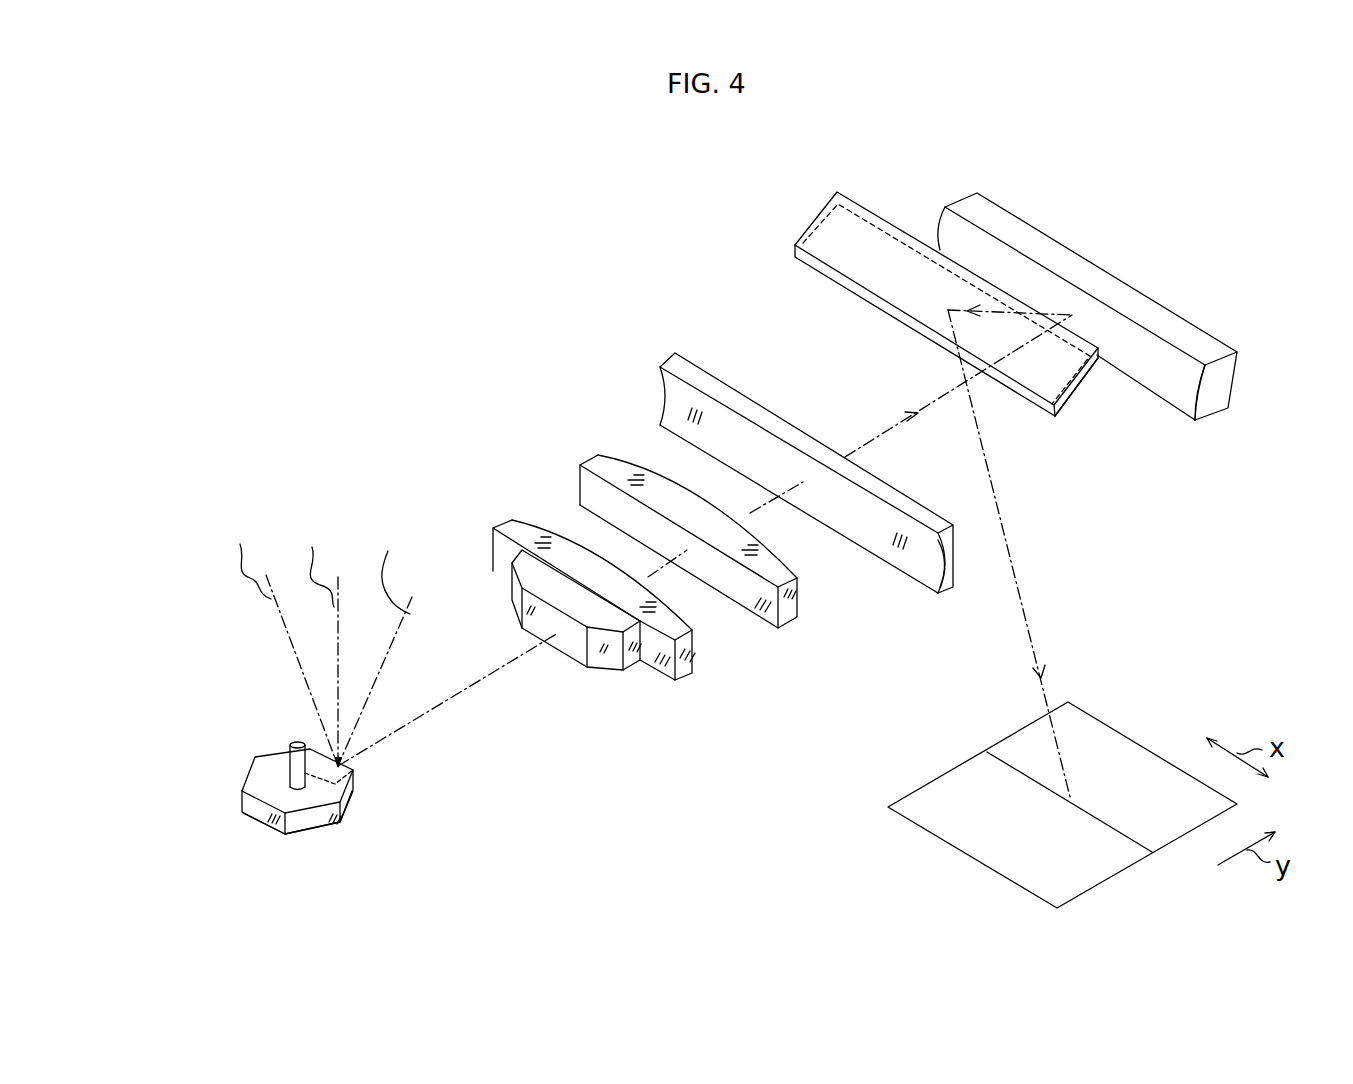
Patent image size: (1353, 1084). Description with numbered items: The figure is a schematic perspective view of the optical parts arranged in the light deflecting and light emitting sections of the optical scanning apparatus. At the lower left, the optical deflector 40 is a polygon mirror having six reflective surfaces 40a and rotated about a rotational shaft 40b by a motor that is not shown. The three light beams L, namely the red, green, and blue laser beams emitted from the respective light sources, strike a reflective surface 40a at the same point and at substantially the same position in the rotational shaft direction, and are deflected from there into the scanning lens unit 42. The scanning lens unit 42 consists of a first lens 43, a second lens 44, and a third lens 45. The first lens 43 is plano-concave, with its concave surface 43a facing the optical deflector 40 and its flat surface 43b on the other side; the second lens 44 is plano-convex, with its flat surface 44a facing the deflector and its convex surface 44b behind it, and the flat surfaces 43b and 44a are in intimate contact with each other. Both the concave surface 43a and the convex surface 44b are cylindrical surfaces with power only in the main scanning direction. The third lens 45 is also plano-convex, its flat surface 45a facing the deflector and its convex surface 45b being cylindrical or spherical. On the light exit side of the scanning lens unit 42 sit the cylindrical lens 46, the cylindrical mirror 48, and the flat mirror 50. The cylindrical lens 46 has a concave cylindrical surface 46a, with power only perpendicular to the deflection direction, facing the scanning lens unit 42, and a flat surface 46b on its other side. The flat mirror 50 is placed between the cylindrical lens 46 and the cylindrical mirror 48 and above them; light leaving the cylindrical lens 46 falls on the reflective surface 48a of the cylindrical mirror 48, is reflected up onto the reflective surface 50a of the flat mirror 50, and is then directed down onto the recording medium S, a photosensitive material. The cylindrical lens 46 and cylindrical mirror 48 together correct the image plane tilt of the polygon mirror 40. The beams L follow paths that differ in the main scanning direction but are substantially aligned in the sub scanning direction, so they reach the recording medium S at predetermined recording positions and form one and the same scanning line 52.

The optical deflector 40 is at (262, 775).
The reflective surfaces 40a is at (262, 818).
The rotational shaft 40b is at (291, 757).
The scanning lens unit 42 is at (380, 313).
The first lens 43 is at (522, 556).
The concave surface 43a is at (570, 643).
The flat surface 43b is at (642, 653).
The second lens 44 is at (512, 520).
The flat surface 44a is at (667, 677).
The convex surface 44b is at (693, 653).
The third lens 45 is at (598, 455).
The flat surface 45a is at (773, 612).
The convex surface 45b is at (798, 603).
The cylindrical lens 46 is at (675, 353).
The concave cylindrical surface 46a is at (917, 570).
The flat surface 46b is at (960, 563).
The cylindrical mirror 48 is at (970, 210).
The reflective surface 48a is at (1178, 397).
The flat mirror 50 is at (828, 228).
The reflective surface 50a is at (1080, 388).
The scanning line 52 is at (1108, 828).
The recording medium S is at (1122, 743).
The light beams L is at (425, 511).